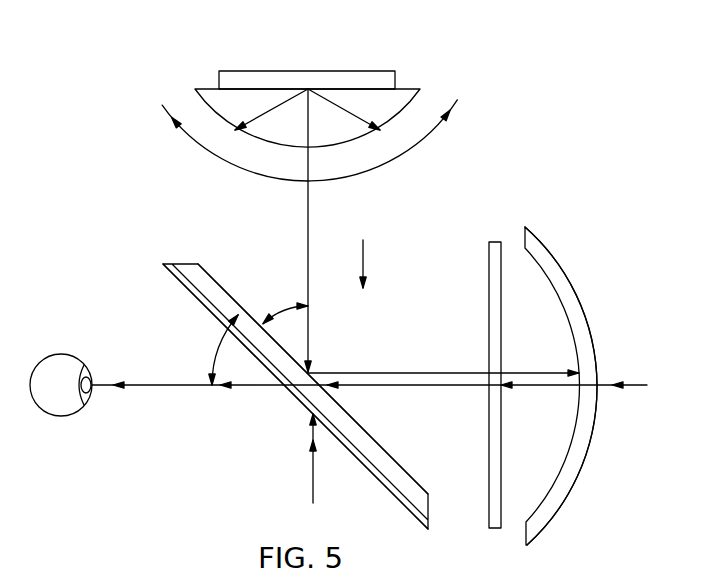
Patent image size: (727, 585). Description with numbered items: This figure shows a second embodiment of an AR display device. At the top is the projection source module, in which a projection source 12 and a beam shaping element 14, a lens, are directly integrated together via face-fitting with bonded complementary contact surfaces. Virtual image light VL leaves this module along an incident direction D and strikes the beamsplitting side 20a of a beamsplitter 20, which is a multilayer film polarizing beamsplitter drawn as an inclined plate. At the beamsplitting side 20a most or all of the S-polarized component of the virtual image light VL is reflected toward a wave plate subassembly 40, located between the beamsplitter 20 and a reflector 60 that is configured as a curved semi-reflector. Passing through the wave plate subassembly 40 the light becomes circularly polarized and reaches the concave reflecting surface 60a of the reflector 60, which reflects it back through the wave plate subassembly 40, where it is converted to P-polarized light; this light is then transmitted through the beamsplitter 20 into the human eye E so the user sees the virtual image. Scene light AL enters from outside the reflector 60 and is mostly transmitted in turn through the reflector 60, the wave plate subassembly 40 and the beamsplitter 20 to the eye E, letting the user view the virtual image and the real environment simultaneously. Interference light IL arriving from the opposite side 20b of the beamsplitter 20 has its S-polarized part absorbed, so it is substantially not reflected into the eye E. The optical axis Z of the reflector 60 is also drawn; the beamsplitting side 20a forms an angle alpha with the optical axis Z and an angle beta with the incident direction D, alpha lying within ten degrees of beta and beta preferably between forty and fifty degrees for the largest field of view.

The projection source 12 is at (307, 47).
The beam shaping element 14 is at (309, 93).
The beamsplitter 20 is at (277, 382).
The beamsplitting side 20a is at (313, 361).
The side of the beamsplitter opposite the incident side 20b is at (295, 396).
The wave plate subassembly 40 is at (459, 379).
The reflector 60 is at (561, 367).
The reflecting surface 60a is at (530, 373).
The human eye E is at (61, 329).
The virtual image light VL is at (322, 230).
The incident direction D is at (363, 251).
The interference light IL is at (302, 458).
The scene light AL is at (470, 370).
The optical axis Z is at (378, 388).